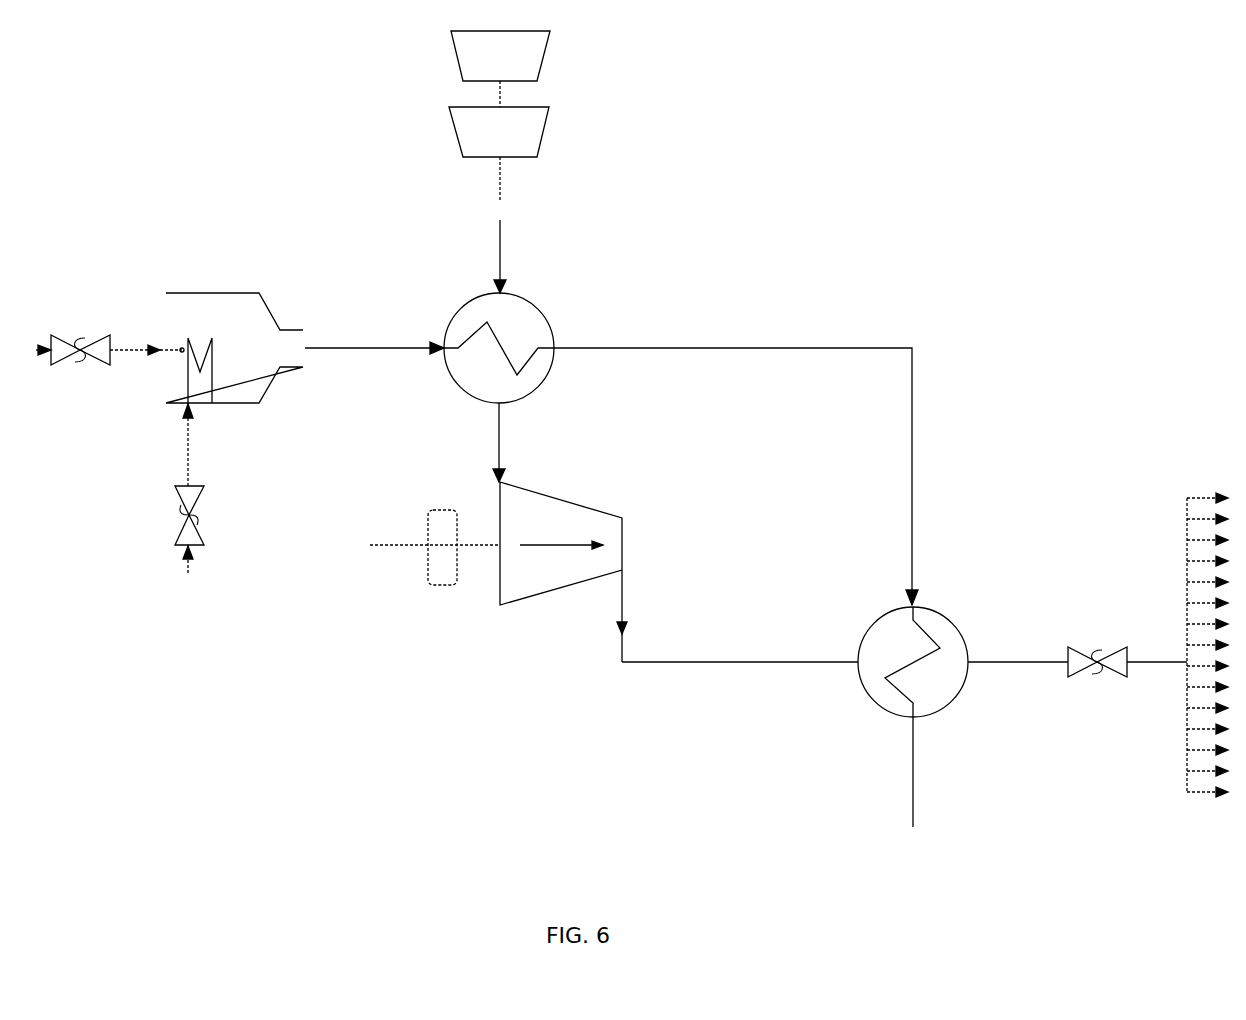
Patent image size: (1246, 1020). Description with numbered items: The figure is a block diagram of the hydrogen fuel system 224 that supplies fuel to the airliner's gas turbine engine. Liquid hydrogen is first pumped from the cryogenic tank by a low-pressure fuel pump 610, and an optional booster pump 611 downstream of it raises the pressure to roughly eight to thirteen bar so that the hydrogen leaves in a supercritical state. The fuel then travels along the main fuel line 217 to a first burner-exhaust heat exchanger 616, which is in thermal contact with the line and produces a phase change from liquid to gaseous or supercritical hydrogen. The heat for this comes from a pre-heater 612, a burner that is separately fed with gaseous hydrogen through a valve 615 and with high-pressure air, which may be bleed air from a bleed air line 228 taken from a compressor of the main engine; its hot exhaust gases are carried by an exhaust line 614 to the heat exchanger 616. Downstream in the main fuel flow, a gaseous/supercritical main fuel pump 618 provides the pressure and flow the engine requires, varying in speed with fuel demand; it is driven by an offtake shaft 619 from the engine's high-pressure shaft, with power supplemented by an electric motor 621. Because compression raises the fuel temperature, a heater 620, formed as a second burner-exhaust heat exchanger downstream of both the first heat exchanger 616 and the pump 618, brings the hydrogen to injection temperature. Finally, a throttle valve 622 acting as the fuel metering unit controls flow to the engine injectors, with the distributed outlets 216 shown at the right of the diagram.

The hydrogen distribution outlets 216 is at (1205, 495).
The main fuel line 217 is at (502, 250).
The hydrogen fuel system 224 is at (898, 268).
The bleed air line 228 is at (120, 345).
The low-pressure fuel pump 610 is at (540, 68).
The booster pump 611 is at (540, 152).
The pre-heater 612 is at (212, 300).
The exhaust line 614 is at (345, 343).
The valve 615 is at (205, 487).
The first burner-exhaust heat exchanger 616 is at (555, 368).
The main fuel pump 618 is at (500, 555).
The offtake shaft 619 is at (407, 543).
The heater 620 is at (945, 620).
The electric motor 621 is at (443, 510).
The throttle valve 622 is at (1072, 678).